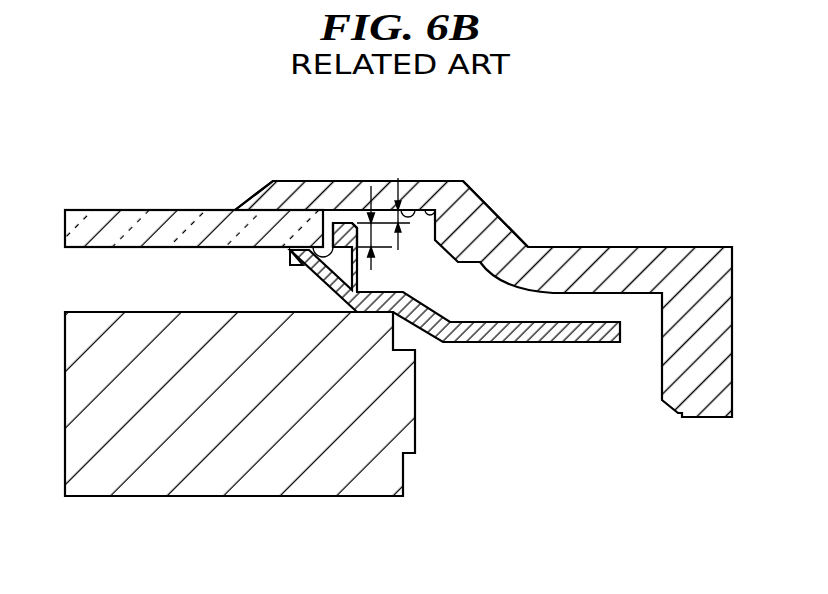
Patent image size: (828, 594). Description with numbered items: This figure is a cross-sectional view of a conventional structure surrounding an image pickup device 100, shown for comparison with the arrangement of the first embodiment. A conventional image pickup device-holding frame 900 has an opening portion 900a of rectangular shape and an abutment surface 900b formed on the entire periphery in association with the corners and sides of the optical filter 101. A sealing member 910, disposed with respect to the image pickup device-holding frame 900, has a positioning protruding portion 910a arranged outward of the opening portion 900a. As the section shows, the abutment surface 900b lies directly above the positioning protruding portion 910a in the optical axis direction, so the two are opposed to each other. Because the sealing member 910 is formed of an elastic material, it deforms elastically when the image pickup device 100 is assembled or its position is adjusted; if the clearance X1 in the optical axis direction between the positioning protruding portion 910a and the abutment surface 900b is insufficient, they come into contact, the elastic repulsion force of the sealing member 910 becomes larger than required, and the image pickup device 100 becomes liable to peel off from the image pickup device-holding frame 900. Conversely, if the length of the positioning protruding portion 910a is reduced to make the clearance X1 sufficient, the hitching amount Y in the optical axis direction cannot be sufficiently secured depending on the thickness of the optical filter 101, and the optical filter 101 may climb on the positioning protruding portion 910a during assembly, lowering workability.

The image pickup device 100 is at (232, 452).
The optical filter 101 is at (130, 222).
The image pickup device-holding frame 900 is at (637, 270).
The opening portion 900a is at (236, 207).
The abutment surface 900b is at (443, 210).
The sealing member 910 is at (543, 343).
The positioning protruding portion 910a is at (342, 222).
The hitching amount Y is at (371, 186).
The clearance X1 is at (398, 180).